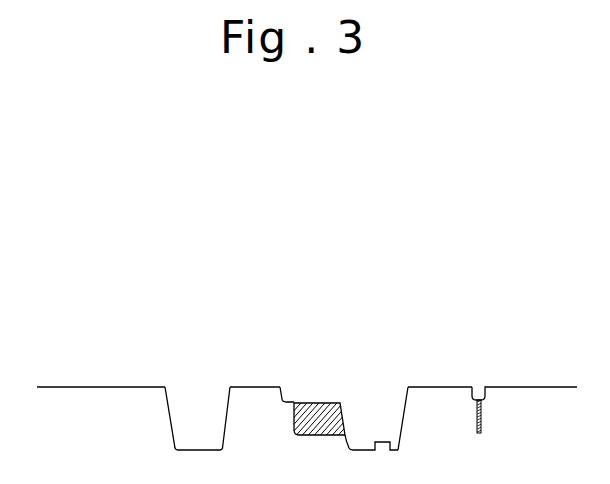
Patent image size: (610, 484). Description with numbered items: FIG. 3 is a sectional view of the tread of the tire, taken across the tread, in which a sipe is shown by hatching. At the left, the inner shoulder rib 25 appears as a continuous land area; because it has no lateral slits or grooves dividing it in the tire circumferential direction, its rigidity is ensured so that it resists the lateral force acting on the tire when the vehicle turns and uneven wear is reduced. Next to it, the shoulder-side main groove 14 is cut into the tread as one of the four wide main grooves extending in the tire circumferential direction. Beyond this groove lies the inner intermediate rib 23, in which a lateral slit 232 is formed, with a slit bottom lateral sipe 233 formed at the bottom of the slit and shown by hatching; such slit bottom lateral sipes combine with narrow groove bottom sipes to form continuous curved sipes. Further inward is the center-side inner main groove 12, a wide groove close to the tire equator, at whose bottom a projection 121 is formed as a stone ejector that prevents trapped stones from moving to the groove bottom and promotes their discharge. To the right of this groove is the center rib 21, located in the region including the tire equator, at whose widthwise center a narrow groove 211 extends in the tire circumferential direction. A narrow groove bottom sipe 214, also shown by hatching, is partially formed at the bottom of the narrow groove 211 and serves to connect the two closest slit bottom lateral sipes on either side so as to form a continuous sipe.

The inner shoulder rib 25 is at (92, 387).
The main groove 14 is at (168, 415).
The inner intermediate rib 23 is at (257, 387).
The lateral slit 232 is at (283, 398).
The slit bottom lateral sipe 233 is at (318, 413).
The projection 121 is at (385, 440).
The center-side inner main groove 12 is at (405, 405).
The center rib 21 is at (440, 386).
The narrow groove 211 is at (477, 398).
The narrow groove bottom sipe 214 is at (485, 417).